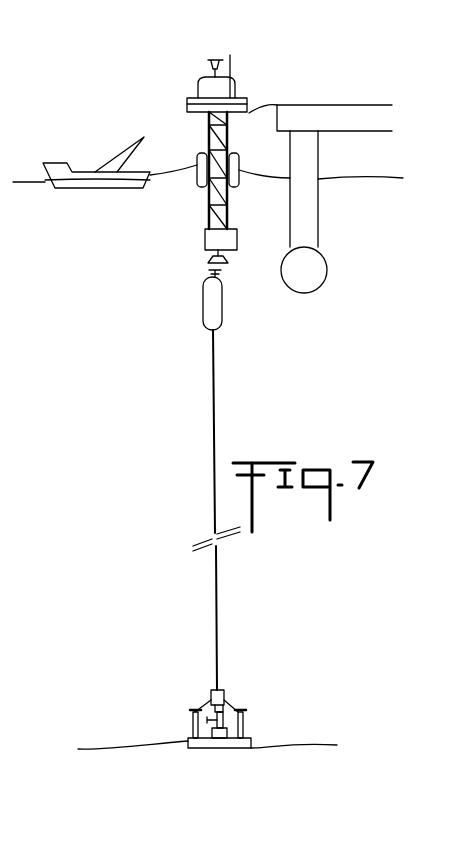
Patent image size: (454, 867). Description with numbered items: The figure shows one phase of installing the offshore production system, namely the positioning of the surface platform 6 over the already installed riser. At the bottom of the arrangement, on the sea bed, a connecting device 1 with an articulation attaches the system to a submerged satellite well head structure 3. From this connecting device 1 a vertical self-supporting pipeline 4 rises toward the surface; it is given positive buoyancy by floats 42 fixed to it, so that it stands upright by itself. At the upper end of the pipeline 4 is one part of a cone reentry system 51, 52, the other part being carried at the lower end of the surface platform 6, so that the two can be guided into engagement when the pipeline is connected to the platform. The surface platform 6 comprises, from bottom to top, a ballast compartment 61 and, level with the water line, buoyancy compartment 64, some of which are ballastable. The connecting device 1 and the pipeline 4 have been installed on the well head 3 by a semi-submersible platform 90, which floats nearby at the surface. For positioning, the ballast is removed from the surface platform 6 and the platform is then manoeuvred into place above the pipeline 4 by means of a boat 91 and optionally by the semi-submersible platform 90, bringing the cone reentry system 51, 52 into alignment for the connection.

The connecting device 1 is at (213, 697).
The submerged satellite well head structure 3 is at (230, 706).
The vertical self-supporting pipeline 4 is at (213, 437).
The surface platform 6 is at (239, 94).
The floats 42 is at (203, 320).
The cone reentry system 51 is at (203, 271).
The cone reentry system 52 is at (228, 262).
The ballast compartment 61 is at (205, 238).
The buoyancy compartment 64 is at (240, 163).
The semi-submersible platform 90 is at (334, 108).
The boat 91 is at (84, 172).